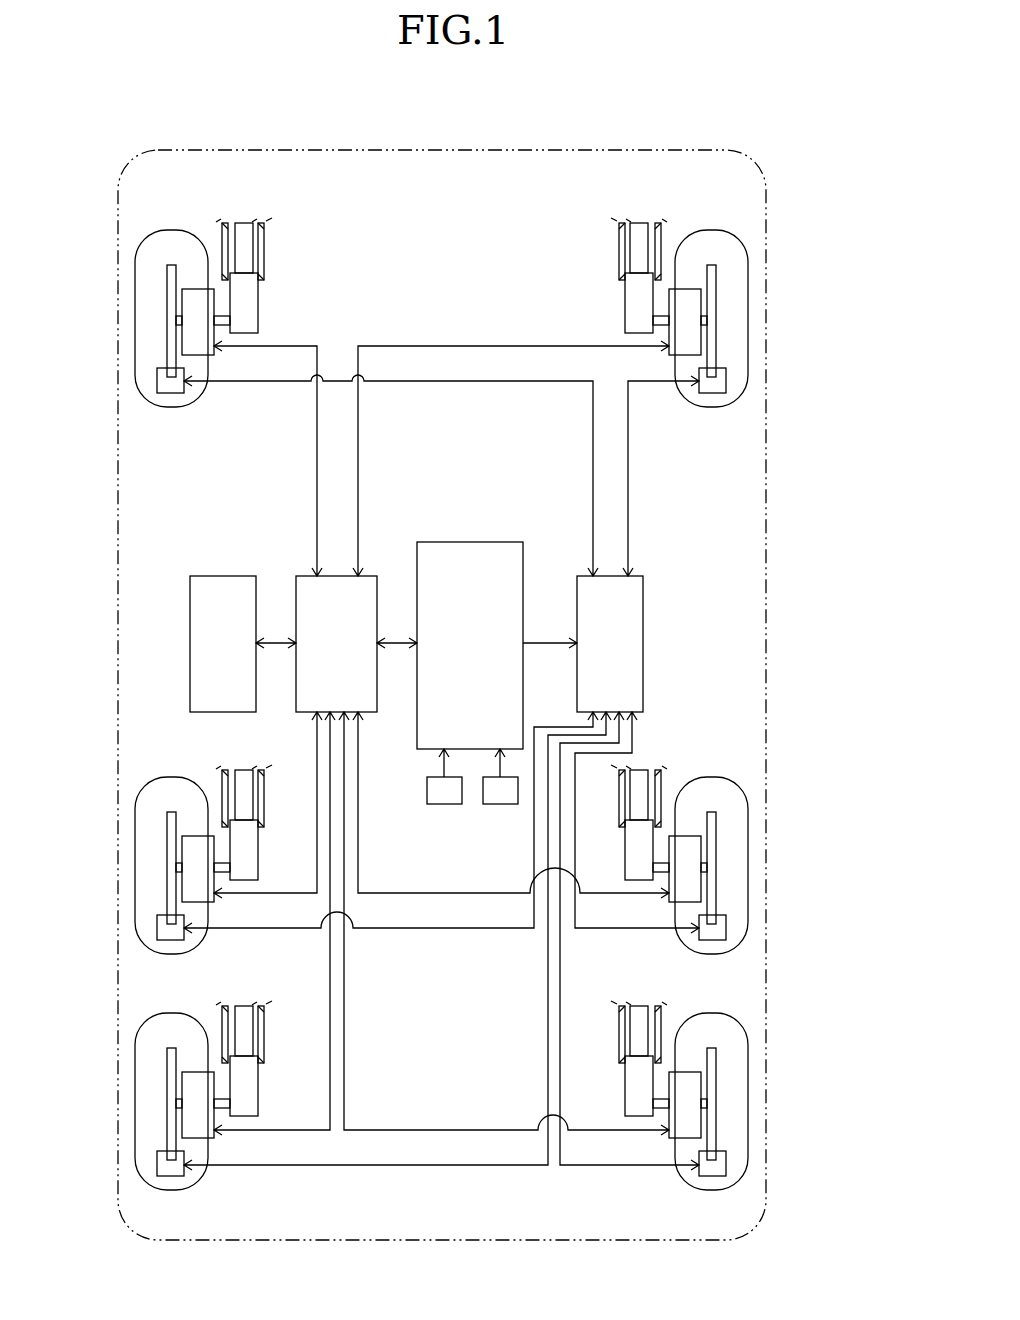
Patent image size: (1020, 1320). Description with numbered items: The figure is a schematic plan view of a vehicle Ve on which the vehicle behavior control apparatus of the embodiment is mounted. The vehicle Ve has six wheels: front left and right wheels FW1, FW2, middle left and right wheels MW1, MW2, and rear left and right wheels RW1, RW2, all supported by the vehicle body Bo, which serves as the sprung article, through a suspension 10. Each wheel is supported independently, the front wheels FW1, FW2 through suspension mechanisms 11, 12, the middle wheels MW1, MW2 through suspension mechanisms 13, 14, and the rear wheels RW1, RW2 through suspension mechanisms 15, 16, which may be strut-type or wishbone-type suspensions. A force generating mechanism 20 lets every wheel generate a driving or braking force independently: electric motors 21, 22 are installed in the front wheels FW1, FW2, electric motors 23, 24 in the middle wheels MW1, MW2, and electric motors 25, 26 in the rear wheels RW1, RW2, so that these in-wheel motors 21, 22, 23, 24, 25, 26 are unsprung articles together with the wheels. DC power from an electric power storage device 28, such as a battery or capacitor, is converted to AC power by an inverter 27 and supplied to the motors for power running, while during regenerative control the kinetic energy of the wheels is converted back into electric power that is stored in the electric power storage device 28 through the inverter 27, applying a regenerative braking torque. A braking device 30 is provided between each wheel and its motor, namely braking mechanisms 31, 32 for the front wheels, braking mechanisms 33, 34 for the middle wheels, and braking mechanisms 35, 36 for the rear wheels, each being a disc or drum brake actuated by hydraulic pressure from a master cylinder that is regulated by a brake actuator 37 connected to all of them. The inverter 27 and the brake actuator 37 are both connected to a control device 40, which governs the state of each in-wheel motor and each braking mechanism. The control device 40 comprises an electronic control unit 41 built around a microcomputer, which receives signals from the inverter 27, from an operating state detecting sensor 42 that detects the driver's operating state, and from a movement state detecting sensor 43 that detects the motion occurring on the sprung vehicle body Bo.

The vehicle Ve is at (790, 118).
The vehicle body Bo is at (768, 637).
The suspension 10 is at (354, 220).
The suspension mechanism 11 is at (258, 302).
The suspension mechanism 12 is at (625, 305).
The suspension mechanism 13 is at (258, 853).
The suspension mechanism 14 is at (625, 853).
The suspension mechanism 15 is at (258, 1107).
The suspension mechanism 16 is at (625, 1107).
The force generating mechanism 20 is at (232, 522).
The electric motor 21 is at (190, 289).
The electric motor 22 is at (686, 289).
The electric motor 23 is at (190, 836).
The electric motor 24 is at (686, 836).
The electric motor 25 is at (190, 1072).
The electric motor 26 is at (686, 1072).
The inverter 27 is at (304, 576).
The electric power storage device 28 is at (203, 576).
The braking device 30 is at (690, 546).
The braking mechanism 31 is at (172, 393).
The braking mechanism 32 is at (709, 393).
The braking mechanism 33 is at (172, 940).
The braking mechanism 34 is at (712, 940).
The braking mechanism 35 is at (172, 1176).
The braking mechanism 36 is at (709, 1176).
The brake actuator 37 is at (643, 637).
The control device 40 is at (430, 522).
The electronic control unit 41 is at (488, 542).
The operating state detecting sensor 42 is at (445, 804).
The movement state detecting sensor 43 is at (500, 804).
The front left wheel FW1 is at (135, 302).
The front right wheel FW2 is at (748, 318).
The middle left wheel MW1 is at (135, 866).
The middle right wheel MW2 is at (748, 879).
The rear left wheel RW1 is at (135, 1113).
The rear right wheel RW2 is at (748, 1110).